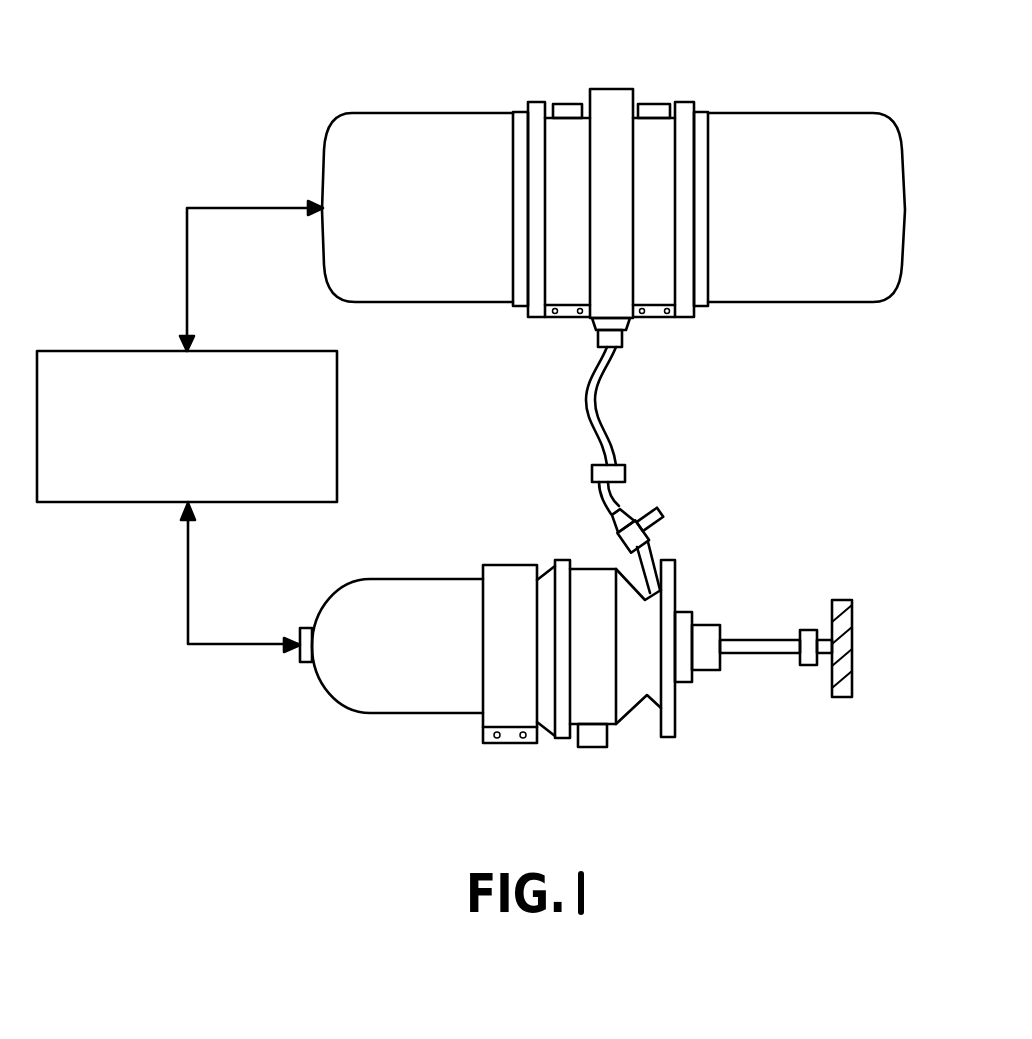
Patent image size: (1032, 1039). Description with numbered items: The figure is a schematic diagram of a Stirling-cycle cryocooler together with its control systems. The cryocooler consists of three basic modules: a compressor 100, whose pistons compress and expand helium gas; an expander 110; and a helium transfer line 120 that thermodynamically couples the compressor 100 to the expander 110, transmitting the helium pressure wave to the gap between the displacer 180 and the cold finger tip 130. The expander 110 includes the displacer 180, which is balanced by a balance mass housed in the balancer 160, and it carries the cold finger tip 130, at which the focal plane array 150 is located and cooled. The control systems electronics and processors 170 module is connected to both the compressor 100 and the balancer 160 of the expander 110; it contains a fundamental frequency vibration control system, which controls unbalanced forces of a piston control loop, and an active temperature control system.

The compressor 100 is at (731, 113).
The expander 110 is at (637, 708).
The helium transfer line 120 is at (620, 438).
The cold finger tip 130 is at (807, 666).
The focal plane array 150 is at (852, 693).
The balancer 160 is at (412, 713).
The control systems electronics and processors 170 is at (119, 502).
The displacer 180 is at (607, 730).